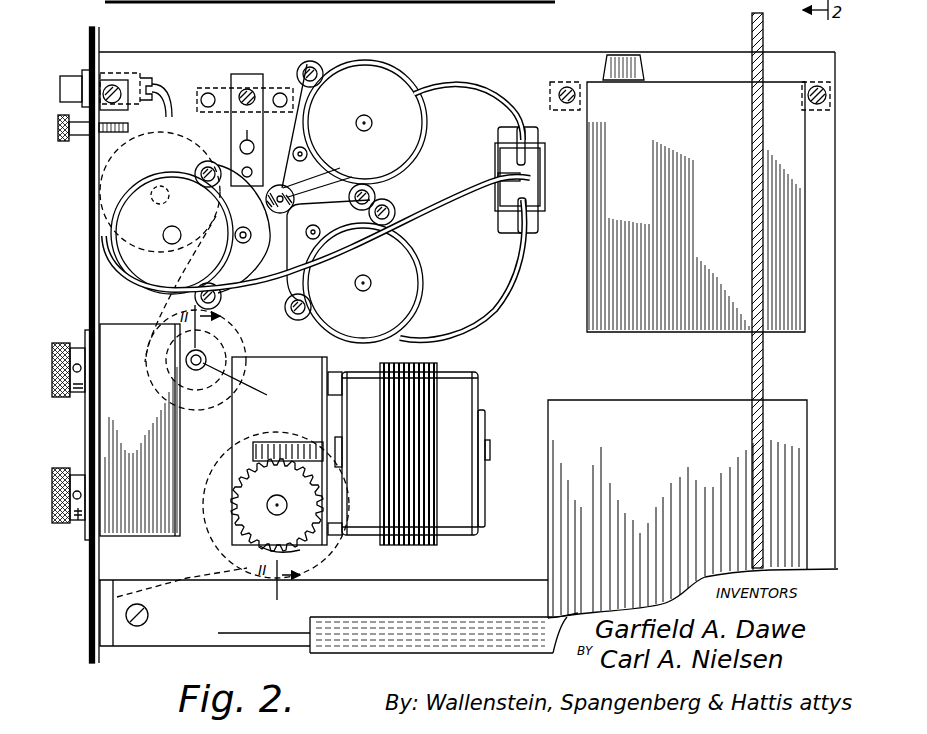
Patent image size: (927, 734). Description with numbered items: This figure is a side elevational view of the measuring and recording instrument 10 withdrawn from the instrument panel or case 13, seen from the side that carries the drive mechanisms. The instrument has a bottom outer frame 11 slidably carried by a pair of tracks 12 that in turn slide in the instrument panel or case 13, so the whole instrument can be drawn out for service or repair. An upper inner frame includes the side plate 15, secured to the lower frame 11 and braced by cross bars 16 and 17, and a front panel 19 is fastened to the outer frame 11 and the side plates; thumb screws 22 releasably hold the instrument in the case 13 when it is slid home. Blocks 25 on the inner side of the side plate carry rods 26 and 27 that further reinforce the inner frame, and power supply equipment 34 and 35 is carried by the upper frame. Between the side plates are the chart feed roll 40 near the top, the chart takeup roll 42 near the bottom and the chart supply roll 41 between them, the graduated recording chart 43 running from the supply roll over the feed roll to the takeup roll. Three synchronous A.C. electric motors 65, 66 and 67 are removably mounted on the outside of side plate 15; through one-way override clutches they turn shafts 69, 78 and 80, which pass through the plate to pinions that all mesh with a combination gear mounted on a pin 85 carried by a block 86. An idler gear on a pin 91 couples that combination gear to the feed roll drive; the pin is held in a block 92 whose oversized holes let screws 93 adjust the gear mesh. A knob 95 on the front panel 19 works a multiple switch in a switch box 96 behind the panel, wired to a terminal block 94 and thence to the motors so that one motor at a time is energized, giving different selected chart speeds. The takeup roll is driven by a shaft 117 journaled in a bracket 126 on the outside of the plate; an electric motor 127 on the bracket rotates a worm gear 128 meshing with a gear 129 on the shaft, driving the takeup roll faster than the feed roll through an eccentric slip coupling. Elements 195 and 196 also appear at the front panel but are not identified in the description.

The measuring and recording instrument 10 is at (78, 236).
The bottom outer frame 11 is at (165, 638).
The tracks 12 is at (358, 645).
The instrument panel or case 13 is at (750, 228).
The side plate 15 is at (475, 65).
The cross bar 16 is at (570, 86).
The cross bar 17 is at (815, 85).
The front panel 19 is at (99, 280).
The thumb screws 22 is at (58, 126).
The blocks 25 is at (208, 92).
The rod 26 is at (203, 100).
The rod 27 is at (280, 93).
The power supply equipment 34 is at (790, 252).
The power supply equipment 35 is at (788, 400).
The chart feed roll 40 is at (100, 180).
The chart supply roll 41 is at (140, 430).
The chart takeup roll 42 is at (204, 540).
The recording chart 43 is at (160, 318).
The synchronous A.C. electric motor 65 is at (405, 284).
The synchronous A.C. electric motor 66 is at (408, 138).
The synchronous A.C. electric motor 67 is at (110, 261).
The shaft 69 is at (320, 234).
The shaft 78 is at (302, 153).
The shaft 80 is at (248, 243).
The pin 85 is at (296, 176).
The block 86 is at (330, 180).
The pin 91 is at (280, 185).
The block 92 is at (232, 131).
The screws 93 is at (249, 89).
The terminal block 94 is at (527, 182).
The knob 95 is at (78, 522).
The switch box 96 is at (107, 418).
The shaft 117 is at (285, 484).
The bracket 126 is at (250, 417).
The electric motor 127 is at (475, 380).
The worm gear 128 is at (274, 438).
The gear 129 is at (300, 550).
The switch 195 is at (68, 76).
The knob 196 is at (58, 345).